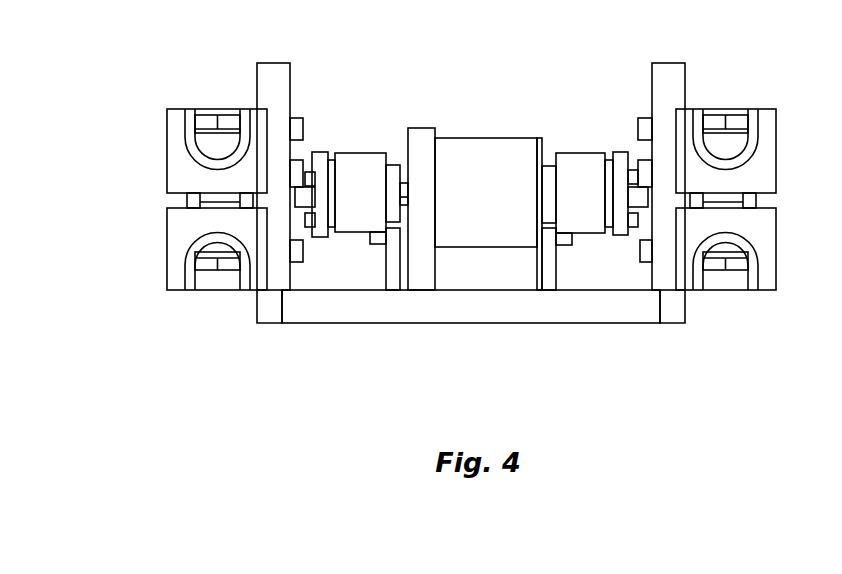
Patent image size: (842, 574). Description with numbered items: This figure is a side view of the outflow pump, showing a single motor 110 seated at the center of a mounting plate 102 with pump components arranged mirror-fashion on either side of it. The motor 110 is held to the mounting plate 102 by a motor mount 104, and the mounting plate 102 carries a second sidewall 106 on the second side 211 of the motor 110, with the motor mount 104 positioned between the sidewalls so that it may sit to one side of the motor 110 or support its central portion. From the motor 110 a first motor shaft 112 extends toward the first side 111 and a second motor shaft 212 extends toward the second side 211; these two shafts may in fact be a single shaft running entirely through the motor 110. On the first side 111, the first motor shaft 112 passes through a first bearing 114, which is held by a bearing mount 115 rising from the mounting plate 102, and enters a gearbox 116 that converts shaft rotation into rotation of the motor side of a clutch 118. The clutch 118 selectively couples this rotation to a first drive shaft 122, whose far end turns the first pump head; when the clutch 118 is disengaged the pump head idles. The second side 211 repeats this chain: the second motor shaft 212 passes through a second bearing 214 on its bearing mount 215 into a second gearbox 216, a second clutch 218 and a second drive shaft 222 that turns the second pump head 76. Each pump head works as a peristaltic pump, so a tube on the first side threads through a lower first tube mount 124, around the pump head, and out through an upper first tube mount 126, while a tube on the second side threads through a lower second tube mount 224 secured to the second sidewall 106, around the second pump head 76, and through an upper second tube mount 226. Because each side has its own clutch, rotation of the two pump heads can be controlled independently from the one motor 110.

The second pump head 76 is at (216, 112).
The mounting plate 102 is at (478, 312).
The motor mount 104 is at (417, 283).
The second sidewall 106 is at (268, 310).
The motor 110 is at (486, 152).
The first side 111 is at (613, 272).
The first motor shaft 112 is at (537, 187).
The first bearing 114 is at (548, 166).
The bearing mount 115 is at (548, 290).
The gearbox 116 is at (582, 153).
The clutch 118 is at (619, 152).
The first drive shaft 122 is at (632, 173).
The lower first tube mount 124 is at (777, 248).
The upper first tube mount 126 is at (777, 157).
The second side 211 is at (333, 272).
The second motor shaft 212 is at (404, 183).
The second bearing 214 is at (393, 165).
The second bearing mount 215 is at (393, 284).
The second gearbox 216 is at (362, 153).
The second clutch 218 is at (318, 152).
The second drive shaft 222 is at (293, 117).
The lower second tube mount 224 is at (165, 247).
The upper second tube mount 226 is at (165, 150).